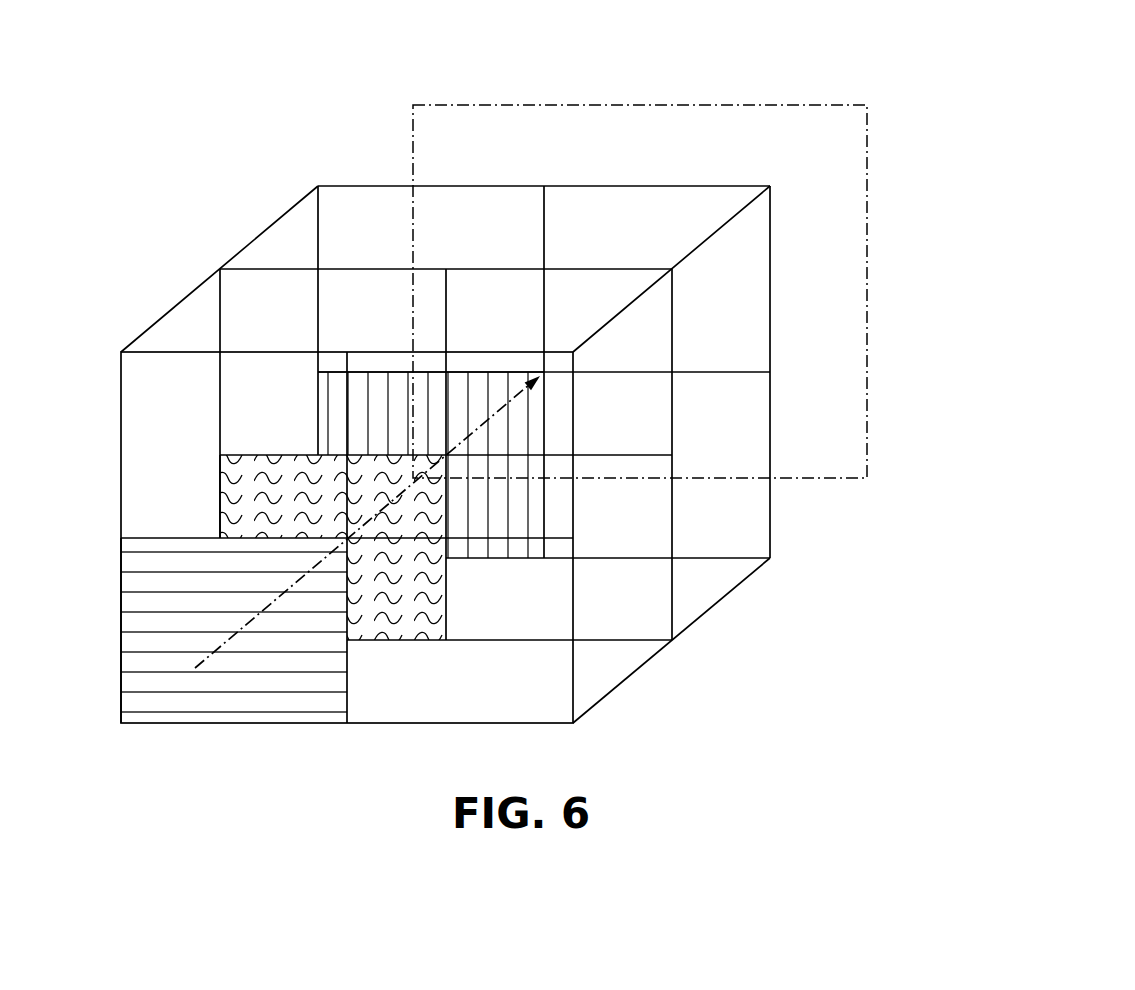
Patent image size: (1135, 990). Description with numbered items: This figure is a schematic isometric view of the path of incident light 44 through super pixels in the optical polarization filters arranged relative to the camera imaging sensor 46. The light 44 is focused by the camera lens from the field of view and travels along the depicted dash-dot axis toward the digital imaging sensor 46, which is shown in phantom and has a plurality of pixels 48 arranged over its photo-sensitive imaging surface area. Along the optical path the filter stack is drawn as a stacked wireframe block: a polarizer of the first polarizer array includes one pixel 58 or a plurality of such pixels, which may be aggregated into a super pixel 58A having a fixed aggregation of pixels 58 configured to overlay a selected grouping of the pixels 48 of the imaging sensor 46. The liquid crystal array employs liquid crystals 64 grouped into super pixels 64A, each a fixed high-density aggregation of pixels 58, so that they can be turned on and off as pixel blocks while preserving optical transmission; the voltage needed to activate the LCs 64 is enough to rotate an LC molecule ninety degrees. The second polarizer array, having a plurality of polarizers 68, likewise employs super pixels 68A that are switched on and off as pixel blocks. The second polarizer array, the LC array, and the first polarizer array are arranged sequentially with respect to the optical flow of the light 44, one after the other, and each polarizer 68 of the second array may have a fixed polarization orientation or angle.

The light 44 is at (402, 520).
The digital imaging sensor 46 is at (882, 155).
The pixels 48 is at (777, 282).
The pixel 58 is at (312, 435).
The super pixel 58A is at (333, 407).
The liquid crystals 64 is at (216, 473).
The super pixels of the LC array 64A is at (235, 492).
The polarizers 68 is at (110, 598).
The super pixels of the second polarizer array 68A is at (145, 683).